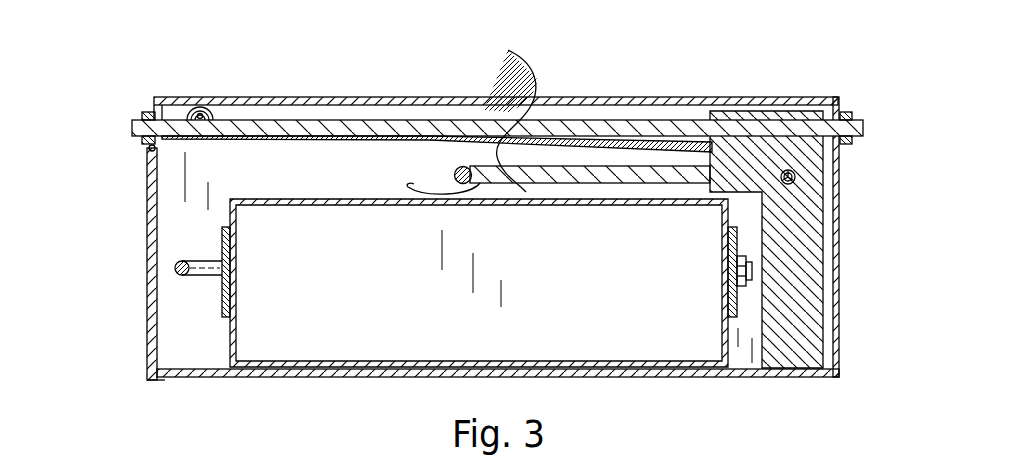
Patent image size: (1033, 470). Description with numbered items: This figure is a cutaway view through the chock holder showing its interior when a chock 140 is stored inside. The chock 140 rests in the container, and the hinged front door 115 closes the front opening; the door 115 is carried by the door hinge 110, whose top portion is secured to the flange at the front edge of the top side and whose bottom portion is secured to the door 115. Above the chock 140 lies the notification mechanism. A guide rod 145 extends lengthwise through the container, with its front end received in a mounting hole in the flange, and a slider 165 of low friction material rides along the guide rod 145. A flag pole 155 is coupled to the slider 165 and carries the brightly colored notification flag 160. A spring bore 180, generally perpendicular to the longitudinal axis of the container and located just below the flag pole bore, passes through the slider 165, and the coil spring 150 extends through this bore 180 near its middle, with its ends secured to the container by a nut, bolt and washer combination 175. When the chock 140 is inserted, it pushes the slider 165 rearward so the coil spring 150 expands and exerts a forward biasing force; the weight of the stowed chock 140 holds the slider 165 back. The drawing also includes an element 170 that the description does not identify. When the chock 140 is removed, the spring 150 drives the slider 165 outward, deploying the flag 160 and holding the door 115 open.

The door hinge 110 is at (149, 148).
The hinged front door 115 is at (148, 320).
The chock 140 is at (337, 337).
The guide rod 145 is at (431, 97).
The coil spring 150 is at (584, 138).
The flag pole 155 is at (612, 178).
The notification flag 160 is at (505, 116).
The slider 165 is at (792, 275).
The pin 170 is at (202, 265).
The nut, bolt and washer combination 175 is at (186, 100).
The spring bore 180 is at (800, 180).